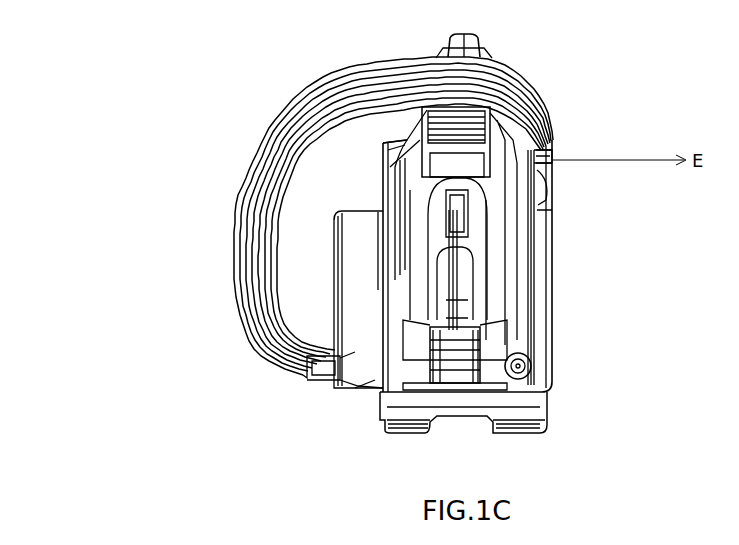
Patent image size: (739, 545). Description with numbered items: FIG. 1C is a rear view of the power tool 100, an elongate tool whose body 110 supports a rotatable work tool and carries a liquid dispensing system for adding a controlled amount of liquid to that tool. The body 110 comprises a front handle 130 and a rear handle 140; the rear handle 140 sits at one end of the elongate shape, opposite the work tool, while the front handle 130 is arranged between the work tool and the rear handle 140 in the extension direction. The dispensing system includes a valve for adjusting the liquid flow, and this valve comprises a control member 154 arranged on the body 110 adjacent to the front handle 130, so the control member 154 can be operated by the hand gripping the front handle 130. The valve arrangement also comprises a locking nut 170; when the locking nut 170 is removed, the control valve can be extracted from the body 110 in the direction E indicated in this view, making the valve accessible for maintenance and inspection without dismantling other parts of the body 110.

The power tool 100 is at (118, 89).
The body 110 is at (495, 248).
The front handle 130 is at (280, 170).
The rear handle 140 is at (468, 312).
The control member 154 is at (555, 147).
The locking nut 170 is at (383, 160).